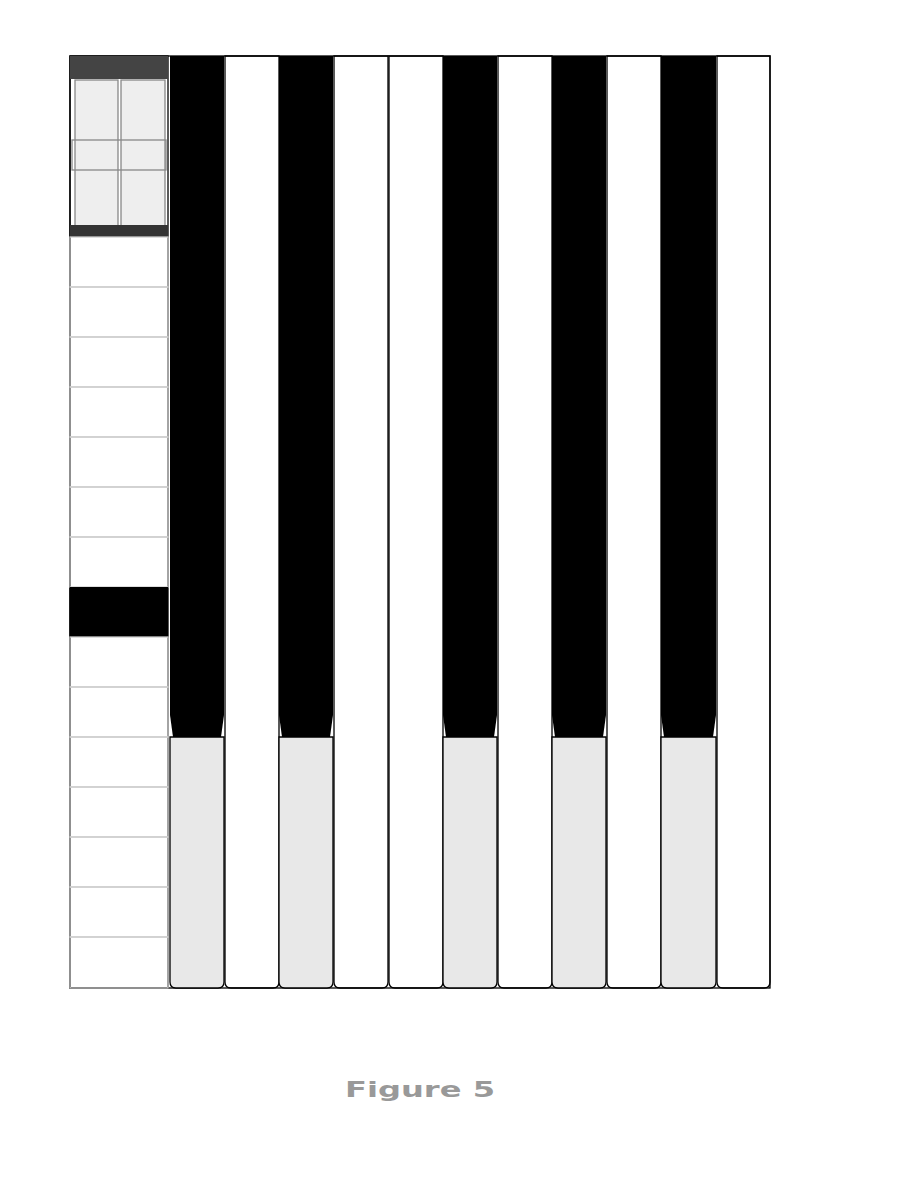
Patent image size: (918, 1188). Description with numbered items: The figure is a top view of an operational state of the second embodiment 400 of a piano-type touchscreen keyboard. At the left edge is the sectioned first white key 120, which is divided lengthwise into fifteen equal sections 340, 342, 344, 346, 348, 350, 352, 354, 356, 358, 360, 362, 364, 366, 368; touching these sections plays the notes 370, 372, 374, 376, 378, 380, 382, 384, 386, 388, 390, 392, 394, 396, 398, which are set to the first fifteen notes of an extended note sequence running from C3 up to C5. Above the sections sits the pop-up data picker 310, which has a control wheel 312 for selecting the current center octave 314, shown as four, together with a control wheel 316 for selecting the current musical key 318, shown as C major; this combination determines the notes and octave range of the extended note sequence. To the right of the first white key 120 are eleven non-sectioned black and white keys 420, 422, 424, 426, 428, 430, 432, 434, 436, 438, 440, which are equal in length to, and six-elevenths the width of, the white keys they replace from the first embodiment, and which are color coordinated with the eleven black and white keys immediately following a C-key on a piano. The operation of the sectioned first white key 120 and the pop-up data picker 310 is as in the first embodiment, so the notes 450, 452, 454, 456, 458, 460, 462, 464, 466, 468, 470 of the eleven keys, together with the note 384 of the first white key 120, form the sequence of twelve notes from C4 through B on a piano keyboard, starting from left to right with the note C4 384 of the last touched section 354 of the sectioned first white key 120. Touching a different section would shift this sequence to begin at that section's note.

The first white key 120 is at (119, 541).
The pop-up data picker 310 is at (94, 84).
The control wheel 312 is at (95, 127).
The current center octave 314 is at (94, 188).
The control wheel 316 is at (143, 127).
The current musical key 318 is at (197, 155).
The section 340 is at (94, 962).
The section 342 is at (94, 912).
The section 344 is at (94, 862).
The section 346 is at (94, 812).
The section 348 is at (94, 762).
The section 350 is at (94, 712).
The section 352 is at (94, 662).
The section 354 is at (94, 612).
The section 356 is at (94, 562).
The section 358 is at (94, 512).
The section 360 is at (94, 462).
The section 362 is at (94, 412).
The section 364 is at (94, 362).
The section 366 is at (94, 312).
The section 368 is at (94, 262).
The note 370 is at (197, 962).
The note 372 is at (197, 912).
The note 374 is at (197, 862).
The note 376 is at (197, 812).
The note 378 is at (197, 762).
The note 380 is at (197, 712).
The note 382 is at (197, 662).
The note 384 is at (197, 612).
The note 386 is at (197, 562).
The note 388 is at (197, 512).
The note 390 is at (197, 462).
The note 392 is at (197, 412).
The note 394 is at (197, 362).
The note 396 is at (197, 312).
The note 398 is at (197, 262).
The second embodiment 400 is at (443, 522).
The black and white key 420 is at (197, 541).
The black and white key 422 is at (252, 541).
The black and white key 424 is at (306, 541).
The black and white key 426 is at (361, 541).
The black and white key 428 is at (416, 541).
The black and white key 430 is at (470, 541).
The black and white key 432 is at (525, 541).
The black and white key 434 is at (579, 541).
The black and white key 436 is at (634, 541).
The black and white key 438 is at (688, 541).
The black and white key 440 is at (743, 541).
The note 450 is at (197, 105).
The note 452 is at (252, 89).
The note 454 is at (306, 105).
The note 456 is at (361, 89).
The note 458 is at (415, 89).
The note 460 is at (470, 105).
The note 462 is at (525, 89).
The note 464 is at (579, 105).
The note 466 is at (634, 89).
The note 468 is at (689, 105).
The note 470 is at (743, 89).